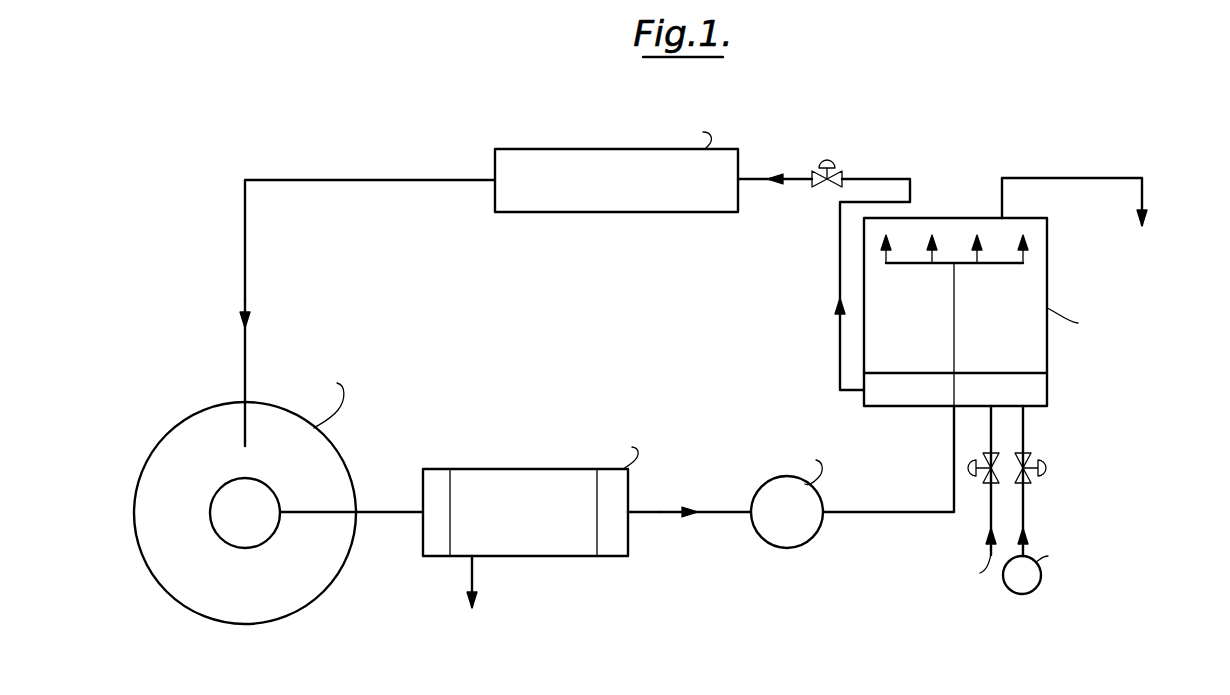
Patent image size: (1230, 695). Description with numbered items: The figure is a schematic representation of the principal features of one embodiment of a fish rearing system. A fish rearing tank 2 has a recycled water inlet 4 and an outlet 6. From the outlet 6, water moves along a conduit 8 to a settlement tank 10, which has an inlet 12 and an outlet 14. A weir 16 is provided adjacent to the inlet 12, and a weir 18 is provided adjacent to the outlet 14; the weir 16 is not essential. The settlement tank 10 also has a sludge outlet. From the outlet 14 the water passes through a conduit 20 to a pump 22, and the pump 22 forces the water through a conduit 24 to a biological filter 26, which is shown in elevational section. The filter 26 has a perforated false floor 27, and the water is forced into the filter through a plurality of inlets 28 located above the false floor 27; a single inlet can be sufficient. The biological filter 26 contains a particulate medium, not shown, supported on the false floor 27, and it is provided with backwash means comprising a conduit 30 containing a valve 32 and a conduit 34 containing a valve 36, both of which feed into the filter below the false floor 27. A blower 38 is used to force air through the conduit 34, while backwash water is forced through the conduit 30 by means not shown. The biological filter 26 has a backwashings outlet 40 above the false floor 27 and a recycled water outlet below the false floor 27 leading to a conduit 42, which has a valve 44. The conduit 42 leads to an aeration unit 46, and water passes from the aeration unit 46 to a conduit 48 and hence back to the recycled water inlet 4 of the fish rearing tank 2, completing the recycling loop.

The fish rearing tank 2 is at (311, 460).
The recycled water inlet 4 is at (245, 422).
The outlet 6 is at (257, 532).
The conduit 8 is at (388, 512).
The settlement tank 10 is at (542, 543).
The inlet 12 is at (421, 513).
The outlet 14 is at (630, 515).
The weir 16 is at (450, 543).
The weir 18 is at (597, 543).
The conduit 20 is at (724, 512).
The pump 22 is at (795, 537).
The conduit 24 is at (890, 512).
The biological filter 26 is at (1047, 340).
The false floor 27 is at (1020, 374).
The inlets 28 is at (977, 254).
The conduit 30 is at (991, 511).
The valve 32 is at (978, 462).
The conduit 34 is at (1023, 502).
The valve 36 is at (1043, 460).
The blower 38 is at (1030, 586).
The backwashings outlet 40 is at (1088, 178).
The conduit 42 is at (872, 178).
The valve 44 is at (830, 160).
The aeration unit 46 is at (627, 212).
The conduit 48 is at (360, 180).